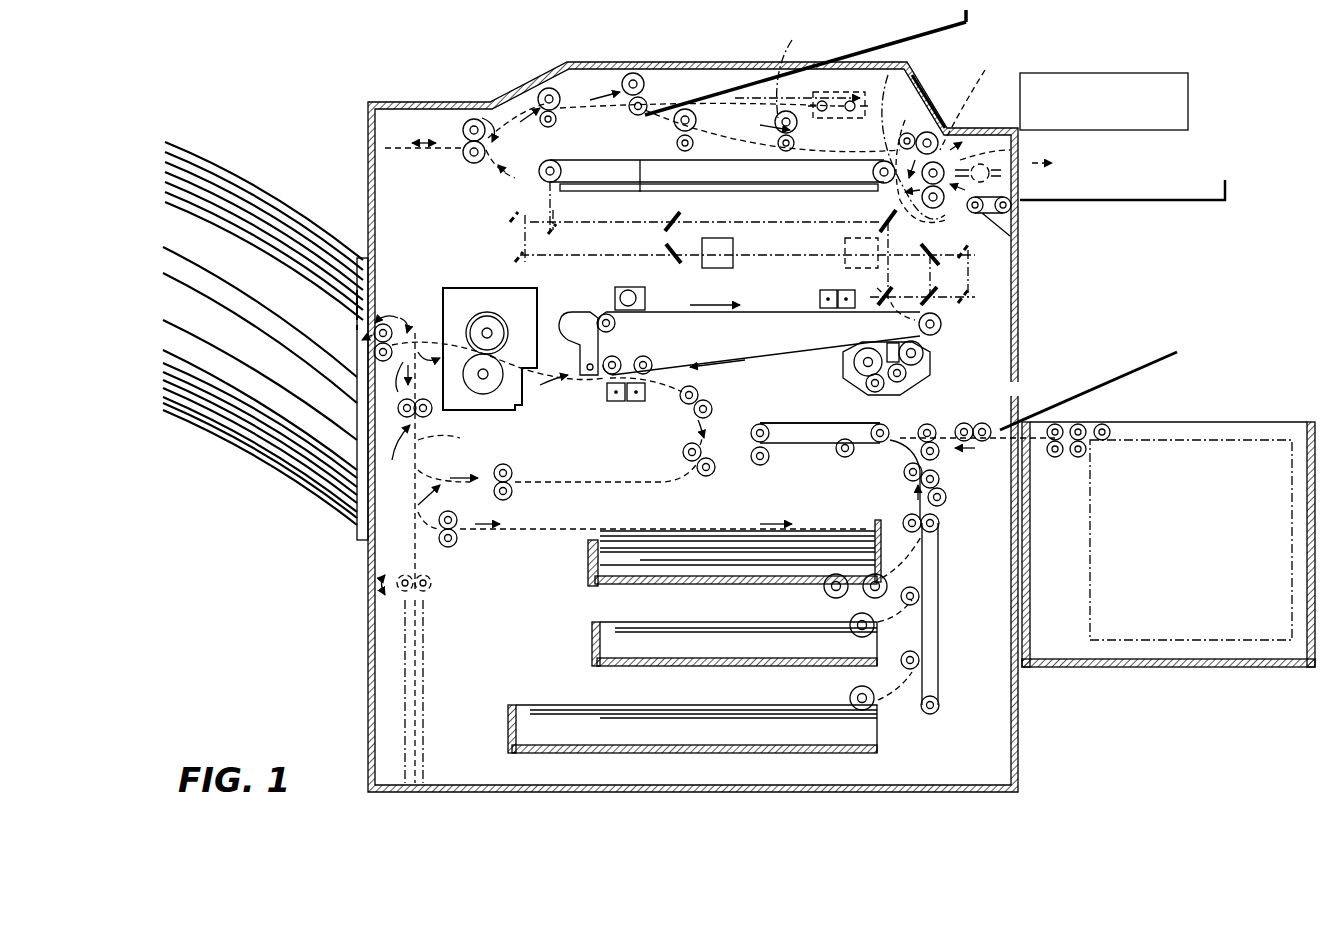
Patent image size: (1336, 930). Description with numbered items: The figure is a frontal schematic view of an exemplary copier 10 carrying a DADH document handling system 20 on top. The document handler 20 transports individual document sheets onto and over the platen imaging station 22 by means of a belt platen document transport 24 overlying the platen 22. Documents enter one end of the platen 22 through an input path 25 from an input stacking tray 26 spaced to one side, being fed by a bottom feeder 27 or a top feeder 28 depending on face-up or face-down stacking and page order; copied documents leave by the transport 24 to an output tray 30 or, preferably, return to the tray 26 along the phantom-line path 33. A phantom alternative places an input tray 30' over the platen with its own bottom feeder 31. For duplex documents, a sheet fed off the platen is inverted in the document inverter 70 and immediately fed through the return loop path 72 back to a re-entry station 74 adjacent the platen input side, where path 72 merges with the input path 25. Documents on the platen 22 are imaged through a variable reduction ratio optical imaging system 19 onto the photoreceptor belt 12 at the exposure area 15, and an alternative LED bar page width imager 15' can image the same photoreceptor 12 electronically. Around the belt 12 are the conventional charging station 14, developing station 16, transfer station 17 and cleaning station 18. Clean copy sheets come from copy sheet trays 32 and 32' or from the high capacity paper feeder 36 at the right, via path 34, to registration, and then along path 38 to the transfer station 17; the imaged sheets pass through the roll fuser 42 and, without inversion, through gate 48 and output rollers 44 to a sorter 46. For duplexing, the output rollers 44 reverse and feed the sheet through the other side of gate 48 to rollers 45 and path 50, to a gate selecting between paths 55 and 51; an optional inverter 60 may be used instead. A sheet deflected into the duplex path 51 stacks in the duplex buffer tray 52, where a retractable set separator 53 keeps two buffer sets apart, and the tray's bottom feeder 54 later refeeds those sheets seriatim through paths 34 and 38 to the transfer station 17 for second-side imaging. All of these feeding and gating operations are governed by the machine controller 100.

The copier 10 is at (413, 67).
The sorter 46 is at (258, 157).
The output rollers 44 is at (332, 345).
The document handling system 20 is at (734, 128).
The document inverter 70 is at (468, 124).
The return loop path 72 is at (697, 85).
The platen imaging station 22 is at (606, 192).
The belt platen document transport 24 is at (641, 192).
The output tray 30 is at (805, 70).
The input tray (alternative, over platen) 30' is at (792, 66).
The bottom feeder 31 is at (824, 90).
The re-entry station 74 is at (920, 92).
The return path 33 is at (960, 140).
The top feeder 28 is at (980, 93).
The input path 25 is at (927, 178).
The bottom feeder 27 is at (1020, 205).
The input stacking tray 26 is at (1055, 198).
The machine controller 100 is at (1135, 77).
The optical imaging system 19 is at (758, 243).
The toner cleaning station 18 is at (578, 314).
The photoreceptor belt 12 is at (745, 365).
The image exposing station 15 is at (955, 325).
The LED bar page width imager 15' is at (899, 291).
The charging station 14 is at (816, 288).
The image developing station 16 is at (930, 380).
The transfer station 17 is at (625, 402).
The sheet path to transfer station 38 is at (684, 402).
The roll fuser 42 is at (476, 328).
The gate 48 is at (417, 348).
The rollers 45 is at (414, 461).
The path 50 is at (456, 440).
The path 55 is at (540, 482).
The duplex path 51 is at (540, 529).
The inverter 60 is at (440, 662).
The copy sheet path 34 is at (940, 505).
The duplex buffer tray 52 is at (692, 586).
The set separator 53 is at (588, 580).
The bottom feeder 54 is at (848, 598).
The copy sheet tray 32 is at (705, 648).
The copy sheet tray 32' is at (664, 724).
The high capacity paper feeder 36 is at (1125, 400).